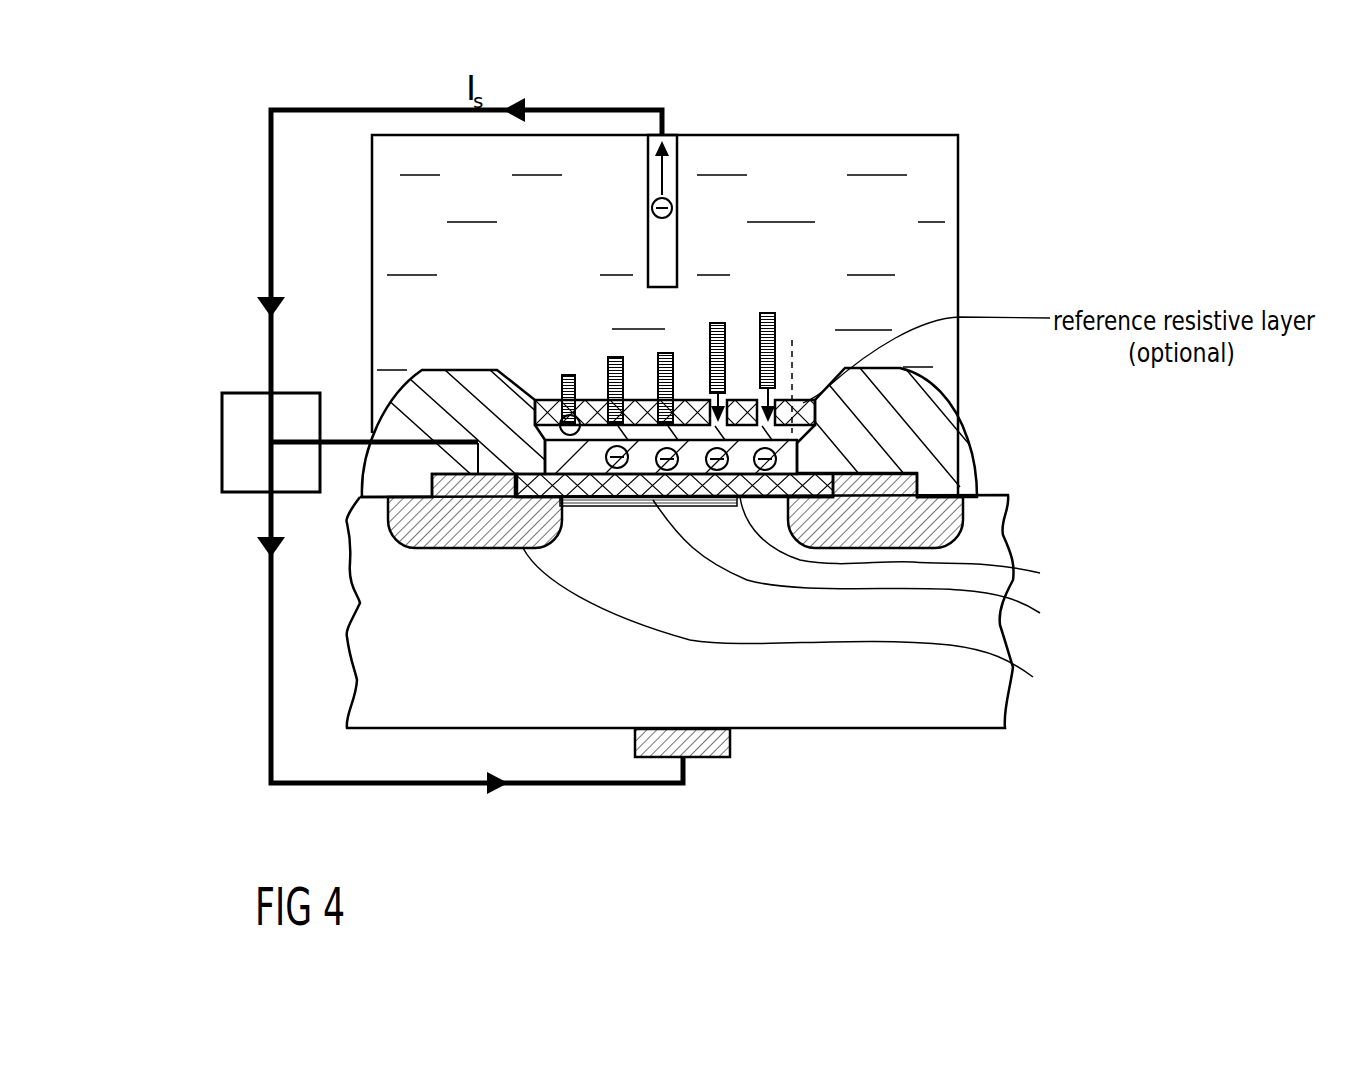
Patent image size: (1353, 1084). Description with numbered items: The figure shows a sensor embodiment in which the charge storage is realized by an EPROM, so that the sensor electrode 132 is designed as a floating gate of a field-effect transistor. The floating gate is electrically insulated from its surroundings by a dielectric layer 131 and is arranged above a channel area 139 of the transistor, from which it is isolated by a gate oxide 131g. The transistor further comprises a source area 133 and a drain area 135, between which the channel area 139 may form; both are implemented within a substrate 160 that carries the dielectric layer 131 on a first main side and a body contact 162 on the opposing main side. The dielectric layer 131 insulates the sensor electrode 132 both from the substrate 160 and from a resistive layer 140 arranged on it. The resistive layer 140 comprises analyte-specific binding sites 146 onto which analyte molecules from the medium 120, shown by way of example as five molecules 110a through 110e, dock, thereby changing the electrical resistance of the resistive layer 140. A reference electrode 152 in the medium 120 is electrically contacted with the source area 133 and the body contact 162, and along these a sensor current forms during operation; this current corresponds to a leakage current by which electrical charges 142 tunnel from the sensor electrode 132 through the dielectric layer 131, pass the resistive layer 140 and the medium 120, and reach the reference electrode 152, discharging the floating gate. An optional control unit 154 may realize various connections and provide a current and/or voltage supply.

The medium 120 is at (825, 170).
The reference electrode 152 is at (665, 172).
The control unit 154 is at (222, 418).
The analyte molecule 110a is at (558, 383).
The analyte molecule 110e is at (773, 342).
The resistive layer 140 is at (598, 403).
The analyte-specific binding sites 146 is at (790, 398).
The electrical charges 142 is at (800, 443).
The sensor electrode 132 is at (797, 472).
The dielectric layer 131 is at (955, 460).
The drain area 135 is at (960, 533).
The gate oxide 131g is at (916, 545).
The channel area 139 is at (866, 567).
The source area 133 is at (797, 622).
The substrate 160 is at (898, 697).
The body contact 162 is at (707, 758).